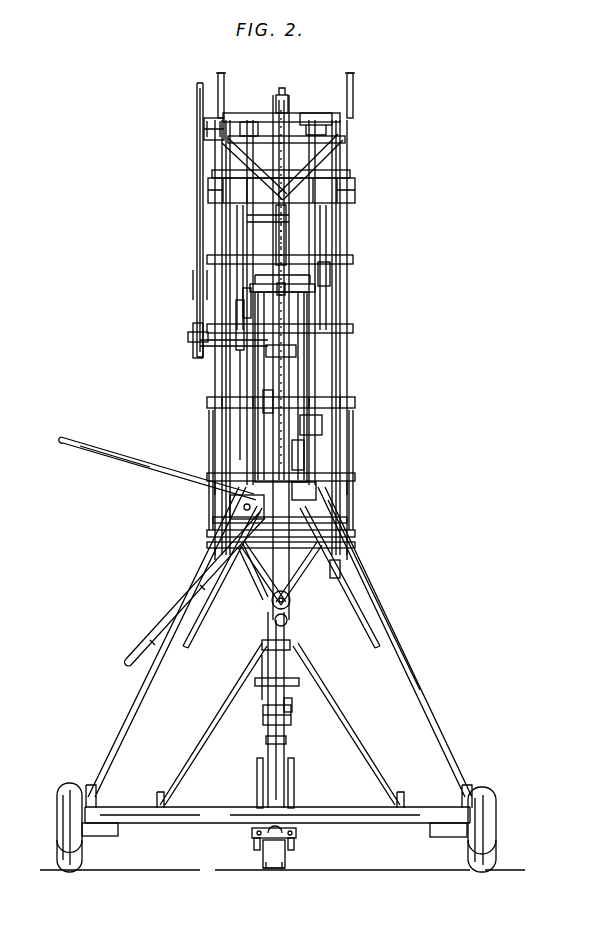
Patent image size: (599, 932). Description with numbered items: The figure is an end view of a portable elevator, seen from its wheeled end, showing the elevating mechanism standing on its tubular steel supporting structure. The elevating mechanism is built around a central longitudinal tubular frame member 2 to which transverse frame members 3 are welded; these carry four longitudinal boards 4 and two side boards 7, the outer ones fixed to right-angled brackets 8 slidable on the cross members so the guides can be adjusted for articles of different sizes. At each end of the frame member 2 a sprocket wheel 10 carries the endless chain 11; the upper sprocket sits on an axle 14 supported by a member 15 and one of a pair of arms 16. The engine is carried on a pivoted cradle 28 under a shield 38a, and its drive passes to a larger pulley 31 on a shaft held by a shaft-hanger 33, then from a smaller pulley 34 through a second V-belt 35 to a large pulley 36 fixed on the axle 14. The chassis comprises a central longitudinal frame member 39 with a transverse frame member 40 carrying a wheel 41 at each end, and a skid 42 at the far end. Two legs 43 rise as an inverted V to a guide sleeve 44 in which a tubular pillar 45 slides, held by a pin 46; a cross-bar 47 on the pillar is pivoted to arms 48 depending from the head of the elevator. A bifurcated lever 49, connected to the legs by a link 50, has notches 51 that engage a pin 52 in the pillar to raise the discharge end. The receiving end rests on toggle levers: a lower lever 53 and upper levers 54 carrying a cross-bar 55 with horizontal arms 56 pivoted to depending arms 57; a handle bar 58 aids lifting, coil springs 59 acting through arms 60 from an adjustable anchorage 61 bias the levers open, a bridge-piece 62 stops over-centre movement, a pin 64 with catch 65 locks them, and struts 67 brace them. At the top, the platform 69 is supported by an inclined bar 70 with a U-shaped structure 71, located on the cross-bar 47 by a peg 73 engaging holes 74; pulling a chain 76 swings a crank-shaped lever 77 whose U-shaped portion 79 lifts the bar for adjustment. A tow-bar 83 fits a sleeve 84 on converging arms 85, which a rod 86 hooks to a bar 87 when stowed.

The central longitudinal tubular frame member 2 is at (298, 413).
The transverse frame members 3 is at (318, 270).
The boards 4 is at (237, 243).
The side boards 7 is at (217, 290).
The right-angled brackets 8 is at (353, 197).
The sprocket wheel 10 is at (283, 108).
The endless chain 11 is at (345, 140).
The axle 14 is at (236, 117).
The member 15 is at (323, 115).
The arms 16 is at (252, 153).
The cradle 28 is at (247, 445).
The pulley 31 is at (247, 353).
The shaft-hanger 33 is at (290, 360).
The smaller pulley 34 is at (240, 347).
The second V-belt 35 is at (197, 280).
The large pulley 36 is at (197, 130).
The shield 38a is at (330, 420).
The central longitudinal frame member 39 is at (275, 868).
The transverse frame member 40 is at (153, 805).
The wheel 41 is at (57, 820).
The skid 42 is at (287, 858).
The legs 43 is at (138, 683).
The guide sleeve 44 is at (348, 480).
The tubular pillar 45 is at (280, 367).
The pin 46 is at (332, 447).
The cross-bar 47 is at (320, 283).
The arms 48 is at (312, 260).
The lever 49 is at (160, 480).
The link 50 is at (220, 503).
The notches 51 is at (303, 510).
The pin 52 is at (327, 557).
The lower lever 53 is at (284, 745).
The upper levers 54 is at (257, 593).
The cross-bar 55 is at (367, 617).
The horizontal arms 56 is at (340, 573).
The arms 57 is at (258, 575).
The handle bar 58 is at (320, 540).
The coil springs 59 is at (294, 841).
The arms 60 is at (257, 787).
The anchorage 61 is at (252, 831).
The bridge-piece 62 is at (291, 728).
The pin 64 is at (292, 712).
The catch 65 is at (268, 738).
The struts 67 is at (185, 640).
The platform 69 is at (312, 118).
The inclined bar 70 is at (286, 233).
The U-shaped structure 71 is at (350, 175).
The peg 73 is at (205, 330).
The holes 74 is at (325, 265).
The chain 76 is at (255, 228).
The crank-shaped lever 77 is at (287, 297).
The U-shaped portion 79 is at (247, 293).
The tow-bar 83 is at (287, 620).
The sleeve 84 is at (290, 643).
The converging arms 85 is at (203, 732).
The rod 86 is at (262, 693).
The bar 87 is at (299, 680).